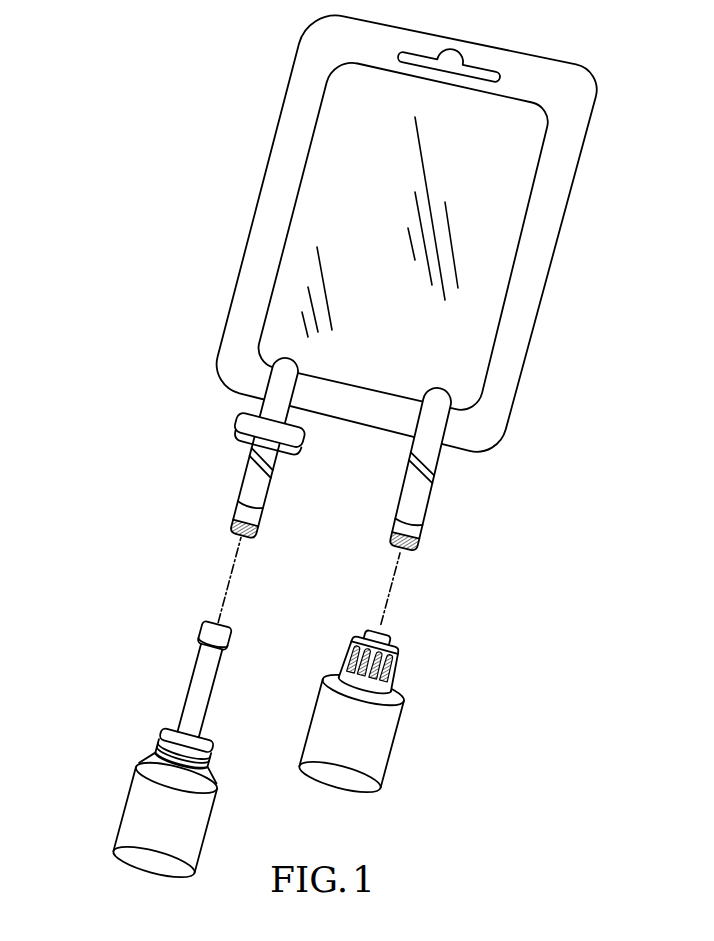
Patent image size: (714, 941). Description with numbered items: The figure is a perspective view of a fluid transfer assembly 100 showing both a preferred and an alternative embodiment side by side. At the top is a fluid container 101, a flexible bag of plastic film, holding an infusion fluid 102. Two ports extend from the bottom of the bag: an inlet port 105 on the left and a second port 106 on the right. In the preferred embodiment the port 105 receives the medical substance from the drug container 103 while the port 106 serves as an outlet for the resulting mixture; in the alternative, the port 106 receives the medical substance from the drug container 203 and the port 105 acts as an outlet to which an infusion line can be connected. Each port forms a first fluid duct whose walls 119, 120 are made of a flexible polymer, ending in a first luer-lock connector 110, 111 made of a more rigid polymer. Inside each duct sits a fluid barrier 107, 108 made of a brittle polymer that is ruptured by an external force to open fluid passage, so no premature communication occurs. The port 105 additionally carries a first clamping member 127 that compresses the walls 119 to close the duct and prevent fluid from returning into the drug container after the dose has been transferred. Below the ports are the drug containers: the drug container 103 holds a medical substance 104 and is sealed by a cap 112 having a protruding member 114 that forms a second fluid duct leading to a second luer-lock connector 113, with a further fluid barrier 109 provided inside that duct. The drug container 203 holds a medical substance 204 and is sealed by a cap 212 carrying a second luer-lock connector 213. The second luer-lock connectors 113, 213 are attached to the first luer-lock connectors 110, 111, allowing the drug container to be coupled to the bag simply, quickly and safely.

The fluid transfer assembly 100 is at (100, 185).
The fluid container 101 is at (268, 166).
The infusion fluid 102 is at (493, 273).
The drug container 103 is at (164, 710).
The medical substance 104 is at (140, 812).
The inlet port 105 is at (252, 447).
The port 106 is at (423, 470).
The fluid barrier 107 is at (276, 478).
The fluid barrier 108 is at (440, 470).
The fluid barrier 109 is at (207, 691).
The first luer-lock connector 110 is at (237, 521).
The first luer-lock connector 111 is at (400, 532).
The cap 112 is at (206, 733).
The second luer-lock connector 113 is at (203, 637).
The protruding member 114 is at (215, 680).
The walls 119 is at (248, 470).
The walls 120 is at (425, 487).
The first clamping member 127 is at (243, 415).
The drug container 203 is at (394, 676).
The medical substance 204 is at (373, 738).
The cap 212 is at (405, 648).
The second luer-lock connector 213 is at (372, 625).